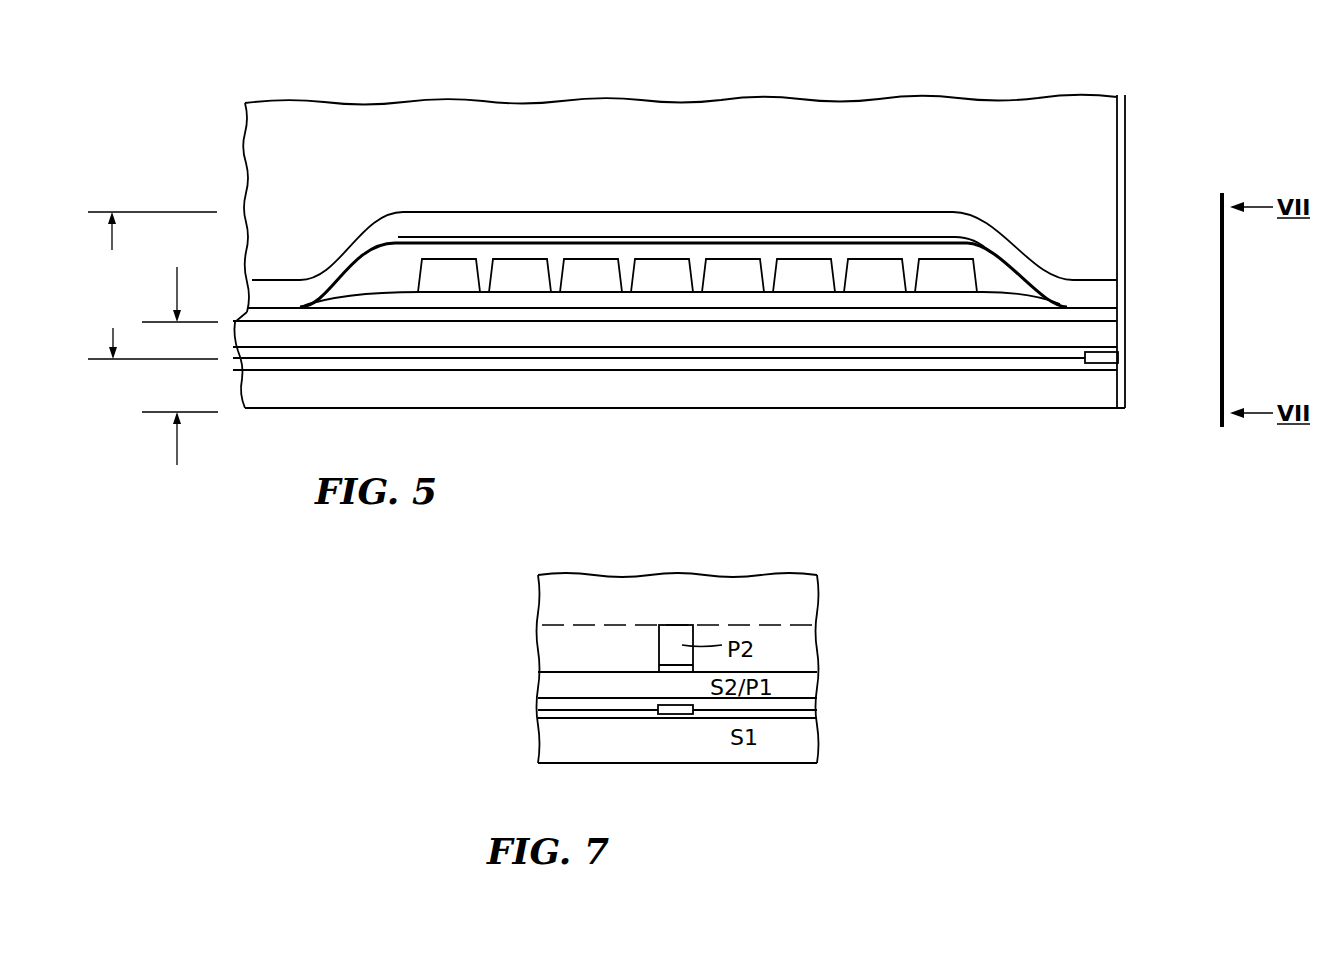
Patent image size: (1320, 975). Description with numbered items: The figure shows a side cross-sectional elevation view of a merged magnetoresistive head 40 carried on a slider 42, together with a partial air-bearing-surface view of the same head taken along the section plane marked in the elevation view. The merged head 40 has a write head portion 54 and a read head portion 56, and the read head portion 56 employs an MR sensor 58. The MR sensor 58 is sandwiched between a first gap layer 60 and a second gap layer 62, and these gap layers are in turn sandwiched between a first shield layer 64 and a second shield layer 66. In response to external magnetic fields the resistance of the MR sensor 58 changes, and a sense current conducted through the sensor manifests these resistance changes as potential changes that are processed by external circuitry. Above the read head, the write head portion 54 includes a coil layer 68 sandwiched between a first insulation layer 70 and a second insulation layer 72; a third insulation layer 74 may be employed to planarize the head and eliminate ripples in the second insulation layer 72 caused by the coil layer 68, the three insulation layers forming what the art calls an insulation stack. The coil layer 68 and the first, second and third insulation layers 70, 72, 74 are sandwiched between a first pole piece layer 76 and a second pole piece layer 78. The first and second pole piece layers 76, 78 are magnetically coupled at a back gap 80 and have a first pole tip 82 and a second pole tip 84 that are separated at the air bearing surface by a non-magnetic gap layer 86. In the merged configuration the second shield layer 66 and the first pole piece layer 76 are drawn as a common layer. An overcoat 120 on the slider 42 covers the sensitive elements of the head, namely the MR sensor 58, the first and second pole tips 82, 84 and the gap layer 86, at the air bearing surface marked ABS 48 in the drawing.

In FIG. 5, the merged magnetoresistive (MR) head 40 is at (207, 93).
In FIG. 7, the merged magnetoresistive (MR) head 40 is at (852, 582).
In FIG. 5, the slider 42 is at (318, 125).
In FIG. 7, the slider 42 is at (543, 598).
In FIG. 5, the air bearing surface (ABS) 48 is at (1117, 122).
In FIG. 5, the overcoat 120 is at (1125, 152).
In FIG. 5, the write head portion 54 is at (146, 271).
In FIG. 5, the read head portion 56 is at (153, 443).
In FIG. 5, the MR sensor 58 is at (1105, 357).
In FIG. 7, the MR sensor 58 is at (677, 715).
In FIG. 5, the first gap layer 60 is at (680, 370).
In FIG. 7, the first gap layer 60 is at (572, 720).
In FIG. 5, the second gap layer 62 is at (618, 346).
In FIG. 7, the second gap layer 62 is at (785, 703).
In FIG. 5, the first shield layer 64 is at (752, 398).
In FIG. 7, the first shield layer 64 is at (802, 743).
In FIG. 5, the second shield layer 66 is at (675, 388).
In FIG. 7, the second shield layer 66 is at (623, 685).
In FIG. 5, the coil layer 68 is at (730, 267).
In FIG. 5, the first insulation layer 70 is at (523, 303).
In FIG. 5, the second insulation layer 72 is at (995, 278).
In FIG. 5, the third insulation layer 74 is at (443, 240).
In FIG. 5, the first pole piece layer 76 is at (852, 335).
In FIG. 7, the first pole piece layer 76 is at (543, 683).
In FIG. 5, the second pole piece layer 78 is at (832, 220).
In FIG. 5, the back gap 80 is at (270, 280).
In FIG. 7, the back gap 80 is at (683, 633).
In FIG. 5, the first pole tip 82 is at (1115, 333).
In FIG. 5, the second pole tip 84 is at (1110, 288).
In FIG. 7, the second pole tip 84 is at (668, 663).
In FIG. 5, the non-magnetic gap layer 86 is at (1117, 311).